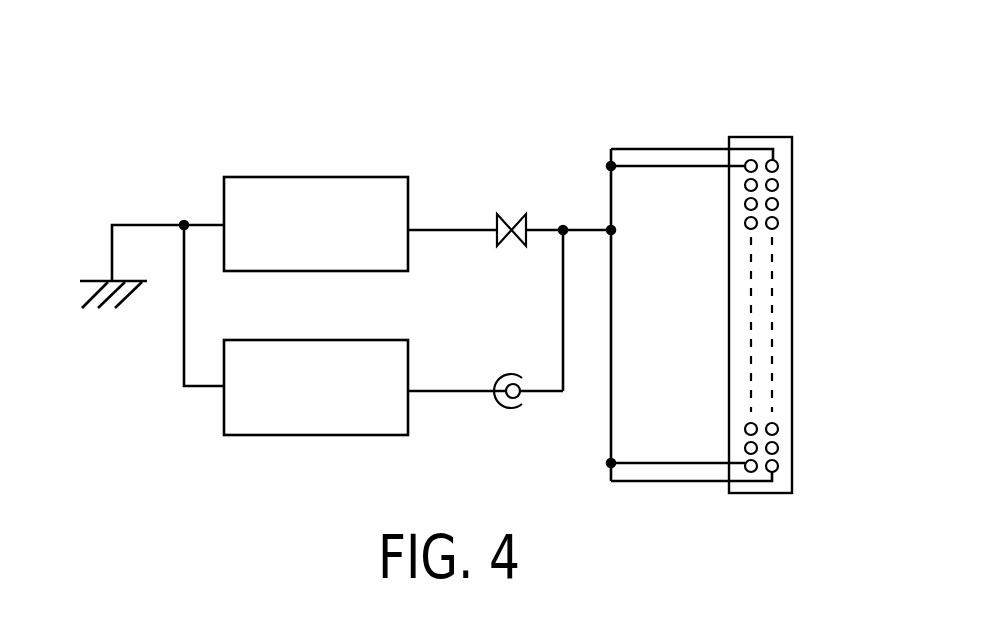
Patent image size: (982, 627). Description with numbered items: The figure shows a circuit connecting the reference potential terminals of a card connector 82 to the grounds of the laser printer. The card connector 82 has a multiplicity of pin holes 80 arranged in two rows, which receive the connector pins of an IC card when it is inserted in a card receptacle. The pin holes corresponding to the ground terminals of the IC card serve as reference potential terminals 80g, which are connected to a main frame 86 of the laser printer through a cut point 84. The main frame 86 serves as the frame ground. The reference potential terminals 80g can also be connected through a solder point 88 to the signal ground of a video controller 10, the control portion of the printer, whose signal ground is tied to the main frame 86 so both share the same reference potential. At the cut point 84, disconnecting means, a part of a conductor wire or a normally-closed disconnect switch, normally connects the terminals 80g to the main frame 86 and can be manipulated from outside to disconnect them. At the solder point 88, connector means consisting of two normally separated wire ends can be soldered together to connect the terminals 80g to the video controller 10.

The video controller 10 is at (315, 436).
The pin holes 80 is at (779, 204).
The reference potential terminals 80g is at (779, 166).
The card connector 82 is at (778, 140).
The cut point 84 is at (506, 192).
The main frame 86 is at (308, 188).
The solder point 88 is at (520, 430).